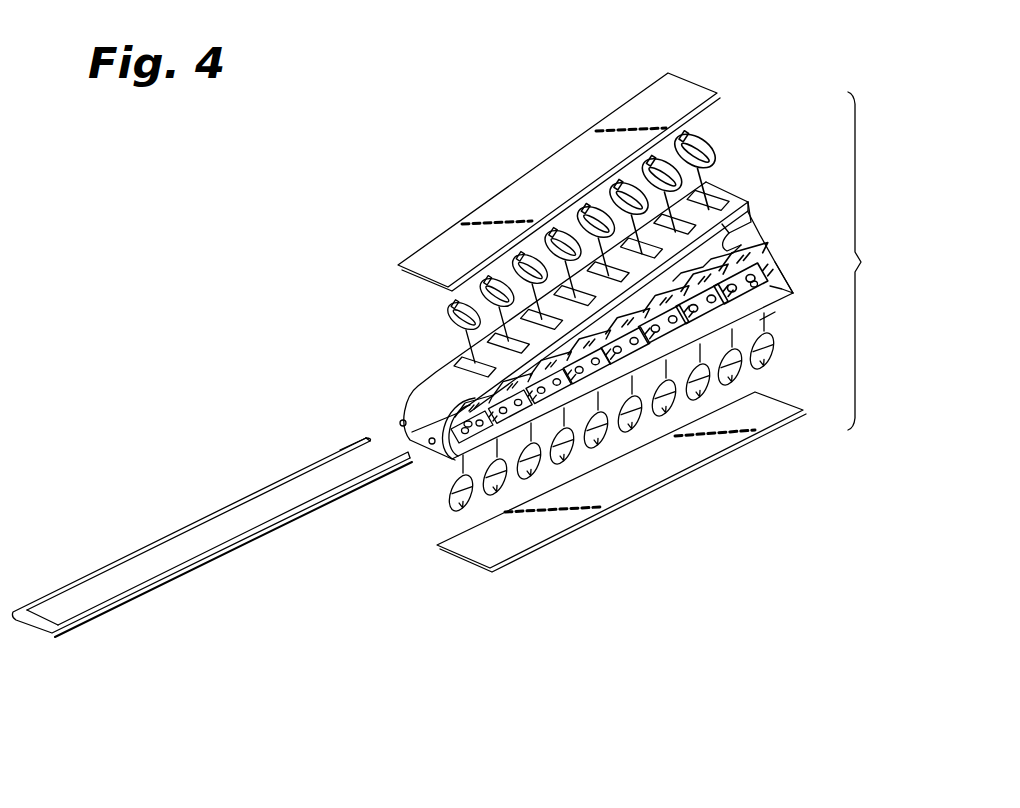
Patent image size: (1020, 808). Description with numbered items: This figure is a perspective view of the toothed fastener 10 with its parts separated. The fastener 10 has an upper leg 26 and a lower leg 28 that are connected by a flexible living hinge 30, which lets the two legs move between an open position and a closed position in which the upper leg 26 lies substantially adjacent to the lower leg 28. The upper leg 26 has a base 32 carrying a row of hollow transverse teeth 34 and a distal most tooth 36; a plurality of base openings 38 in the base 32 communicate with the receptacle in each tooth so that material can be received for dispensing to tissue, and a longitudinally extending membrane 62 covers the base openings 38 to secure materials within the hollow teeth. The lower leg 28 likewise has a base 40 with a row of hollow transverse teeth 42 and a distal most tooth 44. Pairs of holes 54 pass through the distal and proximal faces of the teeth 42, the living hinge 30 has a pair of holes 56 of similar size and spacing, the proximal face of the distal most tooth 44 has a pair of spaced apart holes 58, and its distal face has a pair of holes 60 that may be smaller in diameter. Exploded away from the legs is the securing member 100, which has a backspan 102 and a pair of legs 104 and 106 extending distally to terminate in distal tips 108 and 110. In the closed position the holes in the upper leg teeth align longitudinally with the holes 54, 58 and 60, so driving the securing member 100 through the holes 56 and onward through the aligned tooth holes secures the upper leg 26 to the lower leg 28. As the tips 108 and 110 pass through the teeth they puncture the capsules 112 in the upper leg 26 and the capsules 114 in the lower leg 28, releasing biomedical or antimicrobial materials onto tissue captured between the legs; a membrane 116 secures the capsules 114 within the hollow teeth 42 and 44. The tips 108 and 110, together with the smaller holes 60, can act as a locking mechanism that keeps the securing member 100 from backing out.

The toothed fastener 10 is at (257, 317).
The upper leg 26 is at (405, 332).
The lower leg 28 is at (421, 551).
The living hinge 30 is at (745, 236).
The base 32 is at (740, 215).
The transverse teeth 34 is at (710, 249).
The distal most tooth 36 is at (415, 397).
The base openings 38 is at (720, 197).
The base 40 is at (793, 302).
The transverse teeth 42 is at (770, 320).
The distal most tooth 44 is at (782, 291).
The pairs of holes 54 is at (465, 428).
The pair of holes 56 is at (402, 424).
The pair of spaced apart holes 58 is at (757, 286).
The pair of spaced apart holes 60 is at (787, 262).
The membrane 62 is at (555, 160).
The securing member 100 is at (207, 508).
The backspan 102 is at (38, 638).
The leg 104 is at (115, 560).
The leg 106 is at (178, 573).
The distal tip 108 is at (349, 437).
The distal tip 110 is at (398, 468).
The capsules 112 is at (702, 142).
The capsules 114 is at (456, 510).
The membrane 116 is at (654, 472).